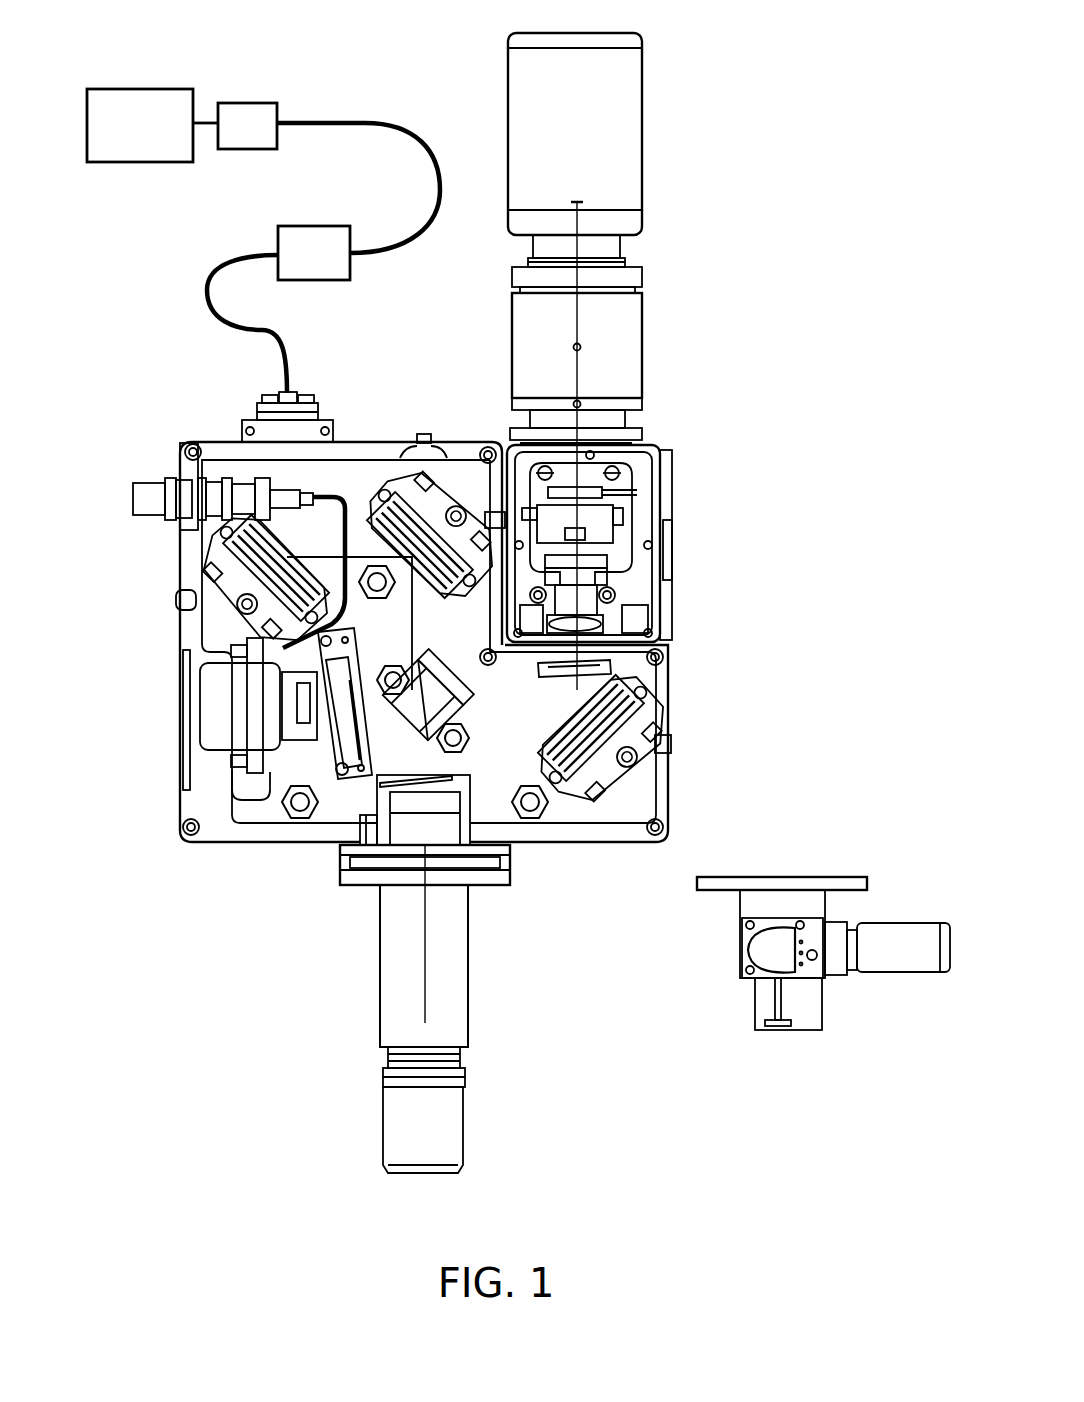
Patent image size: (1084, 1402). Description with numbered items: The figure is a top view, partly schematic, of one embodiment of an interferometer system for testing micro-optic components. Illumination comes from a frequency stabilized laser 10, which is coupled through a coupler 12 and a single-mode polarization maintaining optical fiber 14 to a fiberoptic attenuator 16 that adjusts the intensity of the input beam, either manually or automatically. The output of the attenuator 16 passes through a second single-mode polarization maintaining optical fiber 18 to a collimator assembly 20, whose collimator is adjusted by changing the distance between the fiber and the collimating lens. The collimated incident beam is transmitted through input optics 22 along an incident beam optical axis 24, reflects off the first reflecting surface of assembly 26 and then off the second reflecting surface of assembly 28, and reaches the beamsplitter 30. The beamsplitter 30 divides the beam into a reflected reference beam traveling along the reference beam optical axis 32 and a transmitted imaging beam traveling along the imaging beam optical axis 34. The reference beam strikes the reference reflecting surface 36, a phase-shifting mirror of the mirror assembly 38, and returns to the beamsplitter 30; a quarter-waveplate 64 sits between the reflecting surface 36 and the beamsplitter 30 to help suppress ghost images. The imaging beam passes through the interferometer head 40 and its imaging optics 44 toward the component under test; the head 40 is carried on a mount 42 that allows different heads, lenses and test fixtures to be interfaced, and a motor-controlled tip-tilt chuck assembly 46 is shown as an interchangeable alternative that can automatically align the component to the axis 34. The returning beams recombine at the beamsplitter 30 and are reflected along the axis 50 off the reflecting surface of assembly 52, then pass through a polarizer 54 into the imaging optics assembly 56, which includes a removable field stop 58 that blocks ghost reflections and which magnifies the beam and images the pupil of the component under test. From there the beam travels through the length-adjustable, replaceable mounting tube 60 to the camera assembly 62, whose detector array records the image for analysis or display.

The frequency stabilized laser 10 is at (130, 162).
The coupler 12 is at (270, 118).
The single-mode polarization maintaining optical fiber 14 is at (428, 148).
The fiberoptic attenuator 16 is at (306, 280).
The single-mode polarization maintaining optical fiber 18 is at (205, 316).
The collimator assembly 20 is at (328, 410).
The input optics 22 is at (283, 490).
The incident beam optical axis 24 is at (300, 522).
The first reflecting surface assembly 26 is at (210, 565).
The second reflecting surface assembly 28 is at (395, 488).
The beamsplitter 30 is at (440, 673).
The reference beam optical axis 32 is at (355, 688).
The imaging beam optical axis 34 is at (420, 912).
The reference reflecting surface 36 is at (300, 686).
The mirror assembly 38 is at (222, 717).
The interferometer head 40 is at (410, 1009).
The mount 42 is at (493, 898).
The imaging optics 44 is at (456, 1020).
The tip-tilt chuck assembly 46 is at (878, 905).
The axis 50 is at (487, 705).
The reflecting surface assembly 52 is at (660, 716).
The polarizer 54 is at (612, 670).
The imaging optics assembly 56 is at (676, 437).
The field stop 58 is at (618, 498).
The mounting tube 60 is at (620, 352).
The camera assembly 62 is at (625, 133).
The quarter-waveplate 64 is at (398, 785).